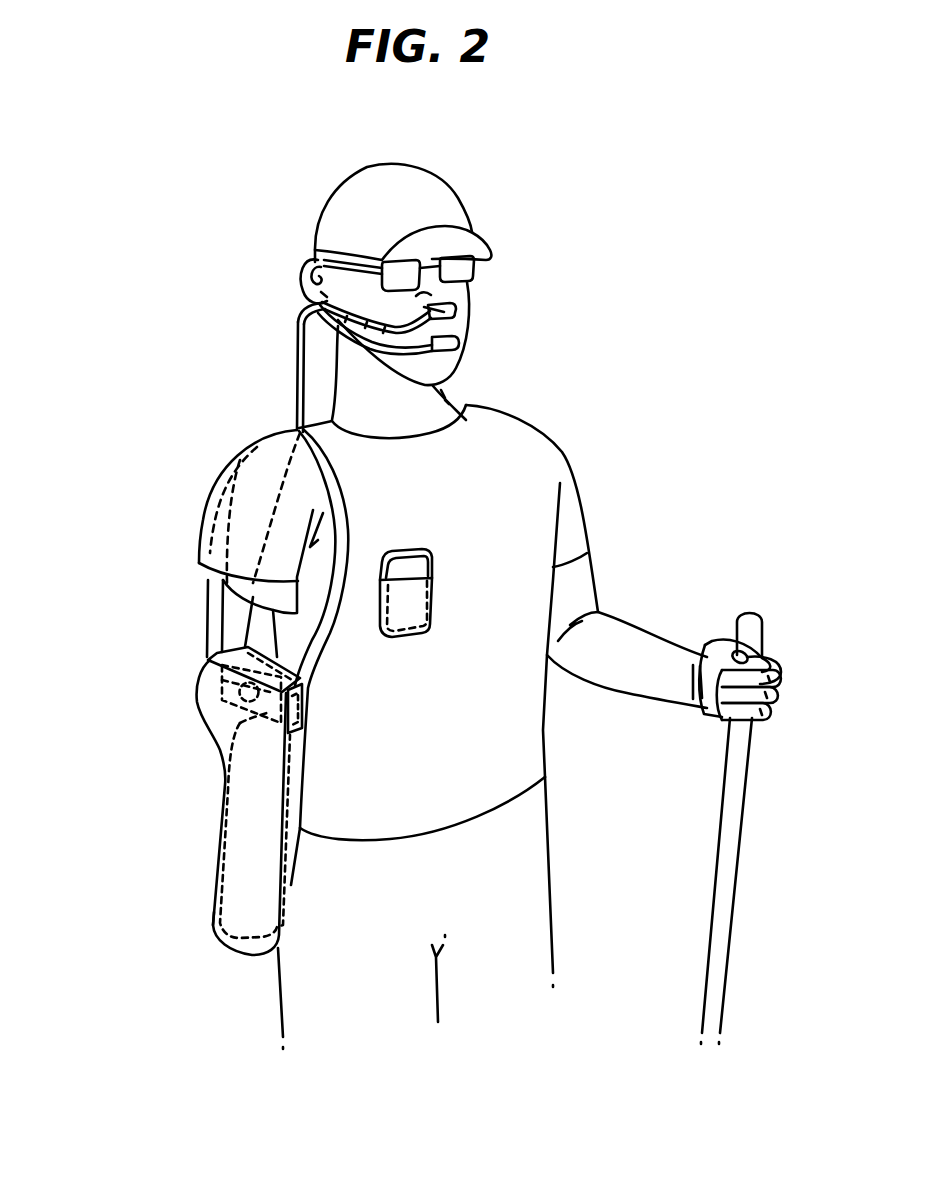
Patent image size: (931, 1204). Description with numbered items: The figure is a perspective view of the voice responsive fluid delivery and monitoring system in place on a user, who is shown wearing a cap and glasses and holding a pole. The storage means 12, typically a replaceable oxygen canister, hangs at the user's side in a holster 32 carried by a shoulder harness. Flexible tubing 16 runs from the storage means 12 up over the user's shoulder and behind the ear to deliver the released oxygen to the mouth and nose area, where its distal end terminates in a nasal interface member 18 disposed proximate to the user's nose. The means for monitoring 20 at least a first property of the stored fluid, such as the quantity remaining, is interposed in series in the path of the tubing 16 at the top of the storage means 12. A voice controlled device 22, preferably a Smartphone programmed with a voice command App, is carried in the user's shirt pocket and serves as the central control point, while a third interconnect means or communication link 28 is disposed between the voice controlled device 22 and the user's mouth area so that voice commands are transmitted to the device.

The storage means 12 is at (230, 788).
The flexible tubing 16 is at (297, 372).
The nasal interface member 18 is at (460, 307).
The means for monitoring 20 is at (218, 690).
The voice controlled device 22 is at (432, 548).
The third interconnect means or communication link 28 is at (462, 343).
The holster 32 is at (212, 932).